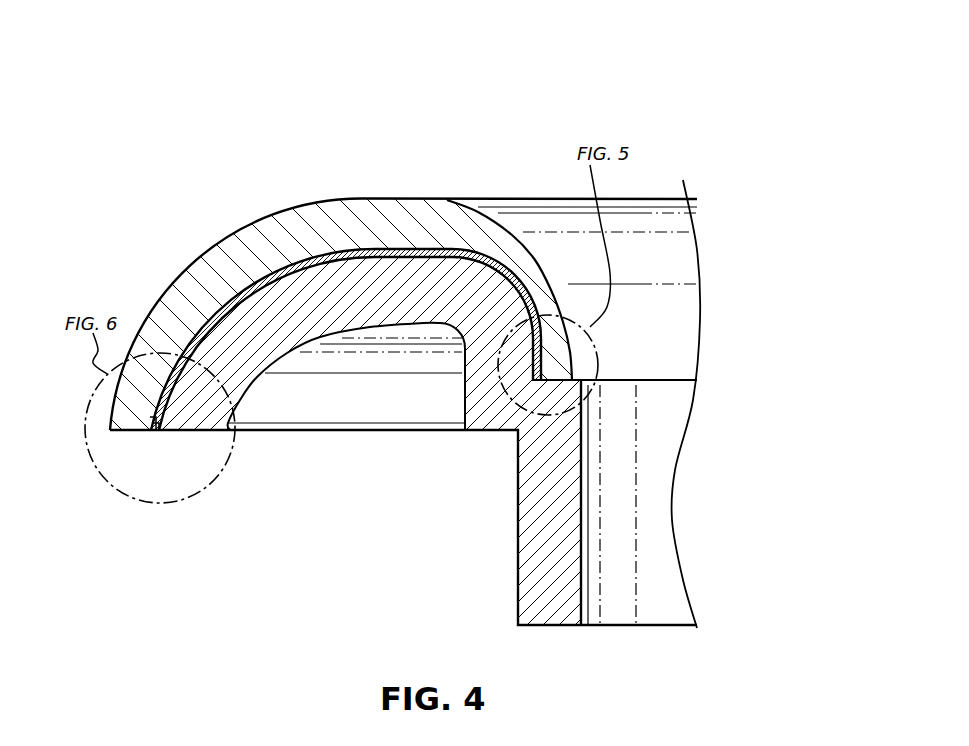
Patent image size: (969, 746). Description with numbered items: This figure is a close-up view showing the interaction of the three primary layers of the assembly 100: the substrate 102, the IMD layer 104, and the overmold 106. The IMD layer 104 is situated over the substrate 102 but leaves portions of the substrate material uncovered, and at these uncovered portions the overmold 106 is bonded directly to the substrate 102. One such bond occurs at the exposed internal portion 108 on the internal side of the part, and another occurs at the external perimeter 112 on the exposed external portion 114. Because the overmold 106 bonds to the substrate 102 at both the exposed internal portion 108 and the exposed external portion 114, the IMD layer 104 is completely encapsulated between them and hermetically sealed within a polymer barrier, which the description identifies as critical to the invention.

The elbow fitting assembly 100 is at (760, 132).
The substrate 102 is at (535, 546).
The IMD layer 104 is at (230, 300).
The overmold 106 is at (285, 248).
The exposed internal portion 108 is at (577, 358).
The external perimeter 112 is at (157, 430).
The exposed external portion 114 is at (160, 430).